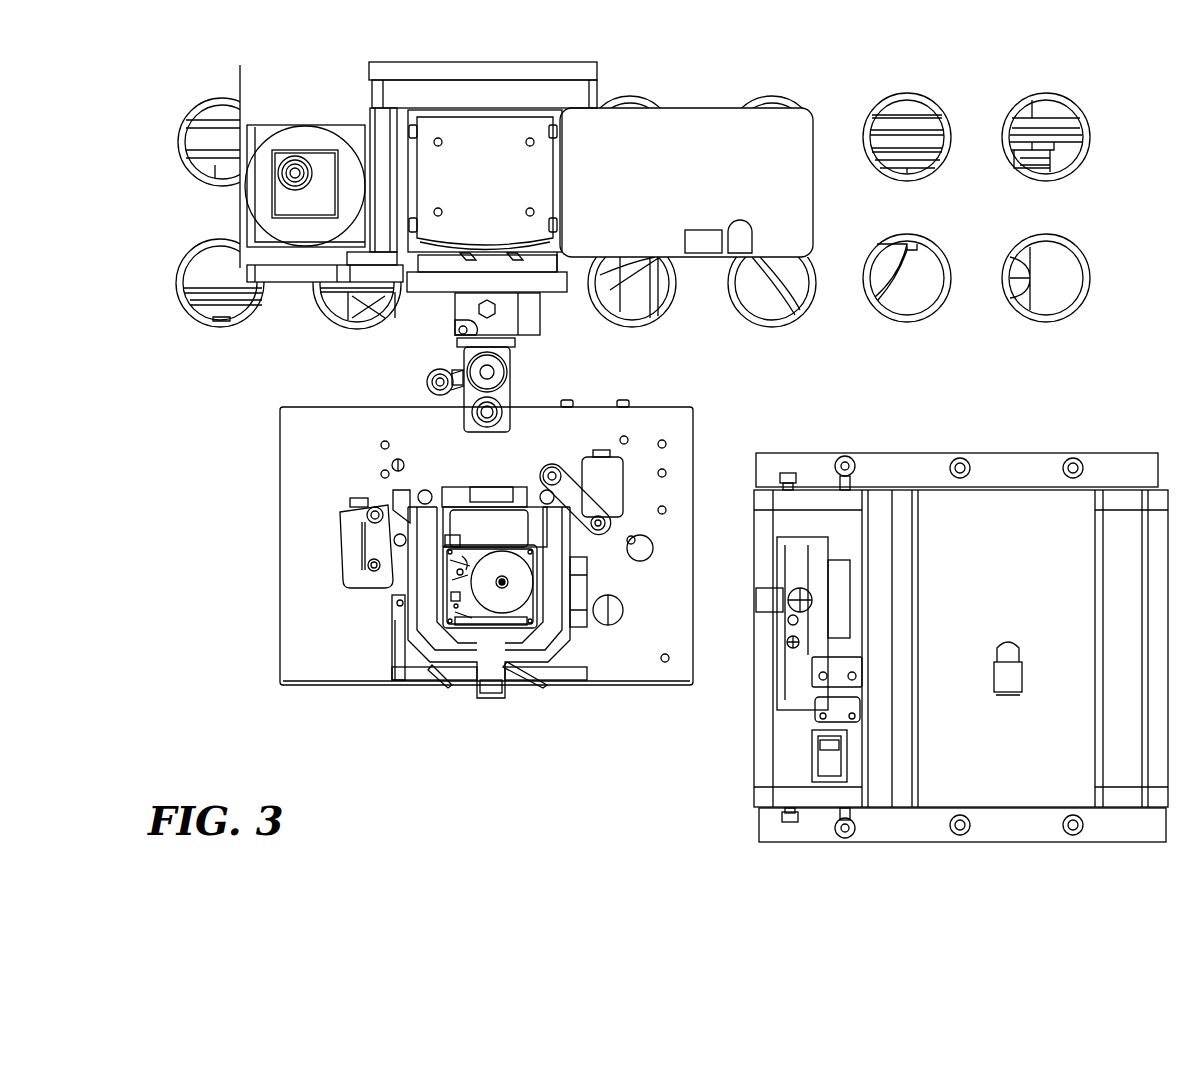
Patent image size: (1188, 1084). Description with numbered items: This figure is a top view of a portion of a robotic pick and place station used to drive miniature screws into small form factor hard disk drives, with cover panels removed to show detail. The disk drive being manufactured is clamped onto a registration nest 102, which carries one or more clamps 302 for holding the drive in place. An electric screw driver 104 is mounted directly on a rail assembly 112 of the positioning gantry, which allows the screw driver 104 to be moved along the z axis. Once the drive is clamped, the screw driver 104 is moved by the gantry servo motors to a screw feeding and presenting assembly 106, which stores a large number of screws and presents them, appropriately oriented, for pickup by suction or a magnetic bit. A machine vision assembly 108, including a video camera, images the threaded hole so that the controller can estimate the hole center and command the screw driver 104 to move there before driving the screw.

The registration nest 102 is at (599, 708).
The electric screw driver 104 is at (510, 360).
The screw feeding and presenting assembly 106 is at (755, 748).
The machine vision assembly 108 is at (262, 210).
The rail assembly 112 is at (445, 299).
The clamps 302 is at (560, 470).